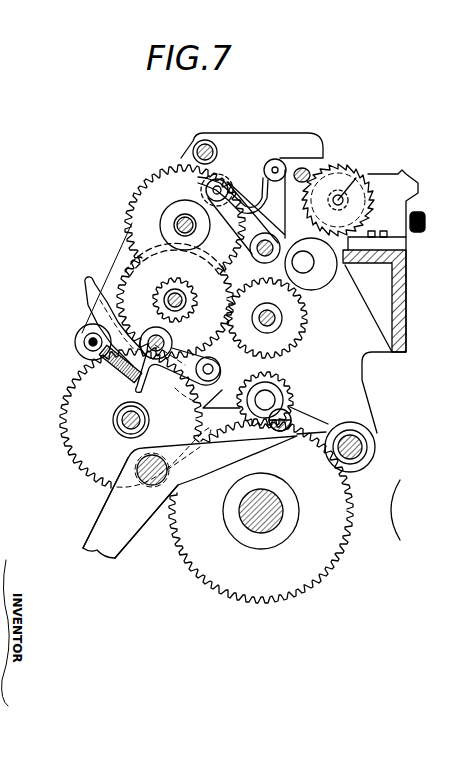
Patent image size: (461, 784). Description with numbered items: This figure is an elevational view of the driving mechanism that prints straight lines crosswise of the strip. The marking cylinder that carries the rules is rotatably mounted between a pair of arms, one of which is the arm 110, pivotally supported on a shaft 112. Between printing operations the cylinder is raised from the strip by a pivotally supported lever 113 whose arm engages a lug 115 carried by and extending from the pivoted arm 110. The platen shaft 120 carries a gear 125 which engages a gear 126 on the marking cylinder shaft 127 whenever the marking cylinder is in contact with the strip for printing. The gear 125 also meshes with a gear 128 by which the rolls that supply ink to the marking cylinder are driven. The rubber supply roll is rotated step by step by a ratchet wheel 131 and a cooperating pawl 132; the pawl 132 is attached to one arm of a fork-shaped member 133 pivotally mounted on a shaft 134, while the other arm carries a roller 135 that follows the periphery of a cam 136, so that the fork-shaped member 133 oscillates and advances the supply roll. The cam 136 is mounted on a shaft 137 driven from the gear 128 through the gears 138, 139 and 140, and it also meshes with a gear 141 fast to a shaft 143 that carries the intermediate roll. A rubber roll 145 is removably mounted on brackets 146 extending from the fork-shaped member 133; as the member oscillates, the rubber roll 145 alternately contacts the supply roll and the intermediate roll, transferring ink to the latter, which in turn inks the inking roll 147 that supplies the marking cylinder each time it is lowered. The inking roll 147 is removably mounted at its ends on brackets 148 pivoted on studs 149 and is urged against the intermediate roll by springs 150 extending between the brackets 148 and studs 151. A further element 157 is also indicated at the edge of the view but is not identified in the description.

The arm 110 is at (313, 428).
The shaft 112 is at (375, 449).
The lever 113 is at (125, 532).
The lug 115 is at (290, 409).
The platen shaft 120 is at (262, 512).
The gear 125 is at (308, 568).
The gear 126 is at (278, 376).
The marking cylinder shaft 127 is at (277, 395).
The gear 128 is at (93, 458).
The ratchet wheel 131 is at (363, 190).
The pawl 132 is at (302, 162).
The fork-shaped member 133 is at (252, 178).
The shaft 134 is at (265, 245).
The roller 135 is at (220, 179).
The cam 136 is at (172, 208).
The shaft 137 is at (173, 228).
The gear 138 is at (130, 288).
The gear 139 is at (160, 288).
The gear 140 is at (130, 208).
The gear 141 is at (292, 330).
The shaft 143 is at (284, 318).
The rubber roll 145 is at (392, 280).
The bracket 146 is at (307, 273).
The inking roll 147 is at (203, 408).
The bracket 148 is at (182, 378).
The stud 149 is at (155, 336).
The spring 150 is at (114, 367).
The stud 151 is at (86, 342).
The member 157 is at (426, 510).